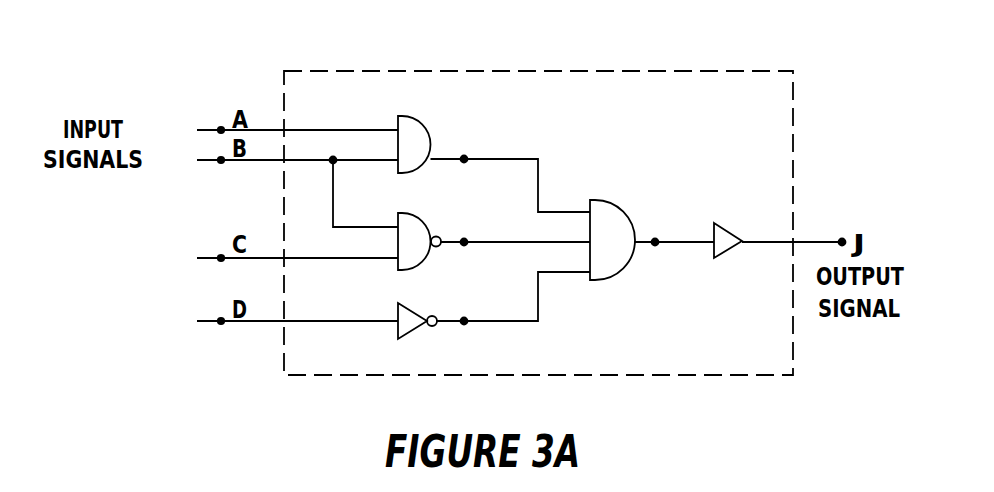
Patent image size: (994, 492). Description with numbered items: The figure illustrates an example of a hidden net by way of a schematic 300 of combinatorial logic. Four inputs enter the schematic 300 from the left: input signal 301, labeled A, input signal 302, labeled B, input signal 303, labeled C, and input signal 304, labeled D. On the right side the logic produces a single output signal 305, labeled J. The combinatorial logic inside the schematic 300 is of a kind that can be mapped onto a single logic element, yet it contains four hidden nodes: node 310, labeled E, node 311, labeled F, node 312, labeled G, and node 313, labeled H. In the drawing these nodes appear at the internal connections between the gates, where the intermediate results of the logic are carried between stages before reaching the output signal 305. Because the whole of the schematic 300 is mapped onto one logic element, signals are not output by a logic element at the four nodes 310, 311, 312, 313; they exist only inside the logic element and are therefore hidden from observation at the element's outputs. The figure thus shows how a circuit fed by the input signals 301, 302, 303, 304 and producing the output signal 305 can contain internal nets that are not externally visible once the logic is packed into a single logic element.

The schematic 300 is at (622, 70).
The input signal 301 is at (275, 130).
The input signal 302 is at (275, 186).
The input signal 303 is at (275, 259).
The input signal 304 is at (275, 324).
The output signal 305 is at (809, 297).
The node 310 is at (494, 164).
The node 311 is at (494, 240).
The node 312 is at (494, 305).
The node 313 is at (666, 240).